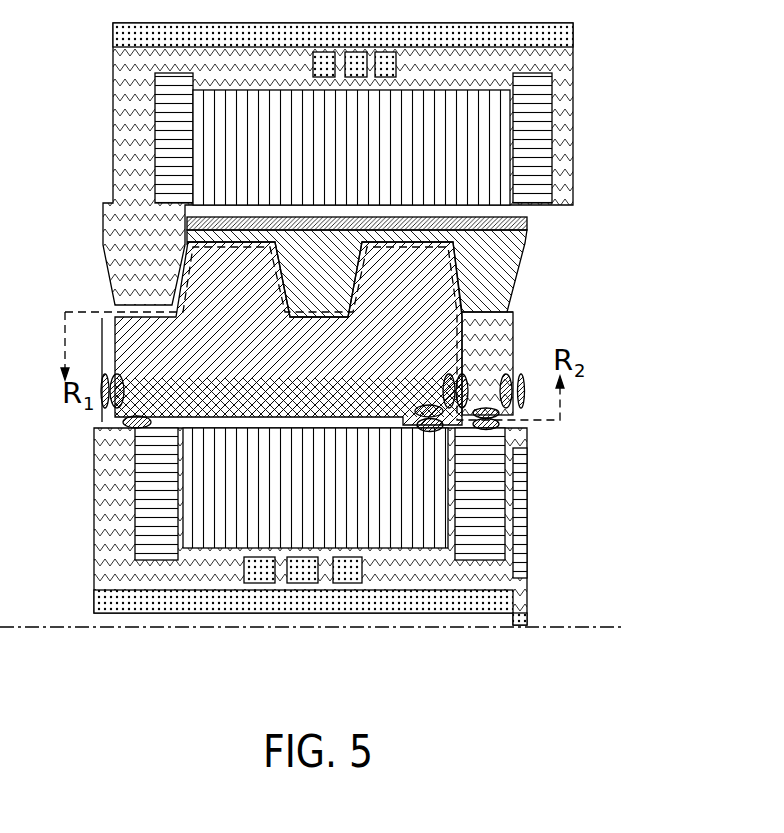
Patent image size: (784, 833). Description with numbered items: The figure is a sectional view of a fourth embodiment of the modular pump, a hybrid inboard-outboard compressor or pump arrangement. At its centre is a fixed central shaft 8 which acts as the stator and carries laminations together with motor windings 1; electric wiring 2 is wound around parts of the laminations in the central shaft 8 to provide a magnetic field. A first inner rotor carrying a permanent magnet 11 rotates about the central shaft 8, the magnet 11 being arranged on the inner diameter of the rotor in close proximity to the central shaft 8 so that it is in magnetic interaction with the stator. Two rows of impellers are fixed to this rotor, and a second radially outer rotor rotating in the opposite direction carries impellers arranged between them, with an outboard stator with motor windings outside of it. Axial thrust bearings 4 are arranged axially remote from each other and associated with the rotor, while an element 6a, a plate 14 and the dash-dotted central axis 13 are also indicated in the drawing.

The motor windings 1 is at (213, 157).
The electric wiring 2 is at (547, 108).
The axial thrust bearings 4 is at (528, 392).
The thin film layer 6a is at (505, 282).
The central shaft 8 is at (107, 514).
The magnet 11 is at (527, 240).
The center axis 13 is at (45, 628).
The plate 14 is at (527, 222).